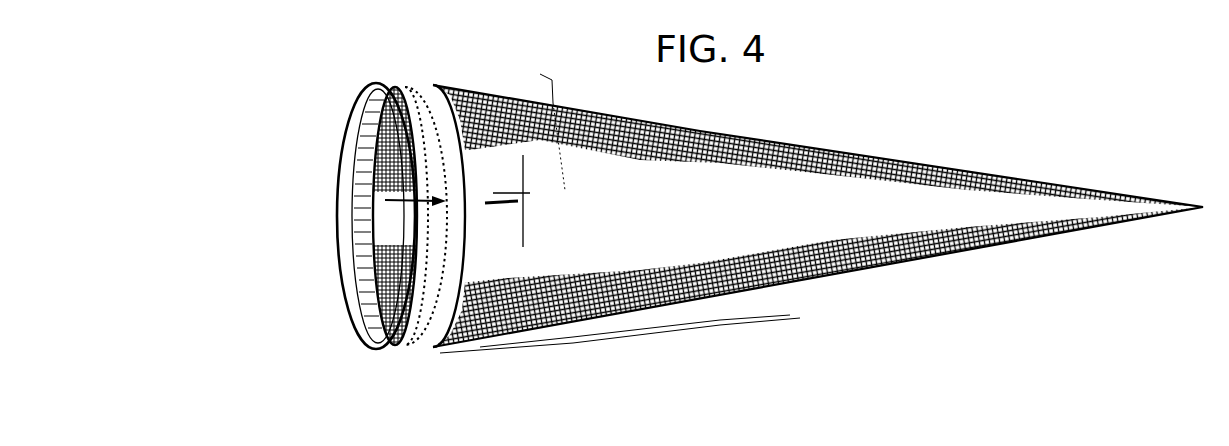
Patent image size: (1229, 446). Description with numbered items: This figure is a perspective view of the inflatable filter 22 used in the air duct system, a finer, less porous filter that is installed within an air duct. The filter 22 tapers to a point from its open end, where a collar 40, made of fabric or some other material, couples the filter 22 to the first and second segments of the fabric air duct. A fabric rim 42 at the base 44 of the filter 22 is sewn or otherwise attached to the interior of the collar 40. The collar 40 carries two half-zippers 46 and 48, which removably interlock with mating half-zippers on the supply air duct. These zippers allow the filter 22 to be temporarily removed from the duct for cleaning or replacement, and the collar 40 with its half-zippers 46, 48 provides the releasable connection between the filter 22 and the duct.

The inflatable filter 22 is at (818, 147).
The collar 40 is at (402, 81).
The fabric rim 42 is at (352, 216).
The base 44 is at (372, 222).
The half-zipper 46 is at (338, 163).
The half-zipper 48 is at (430, 84).